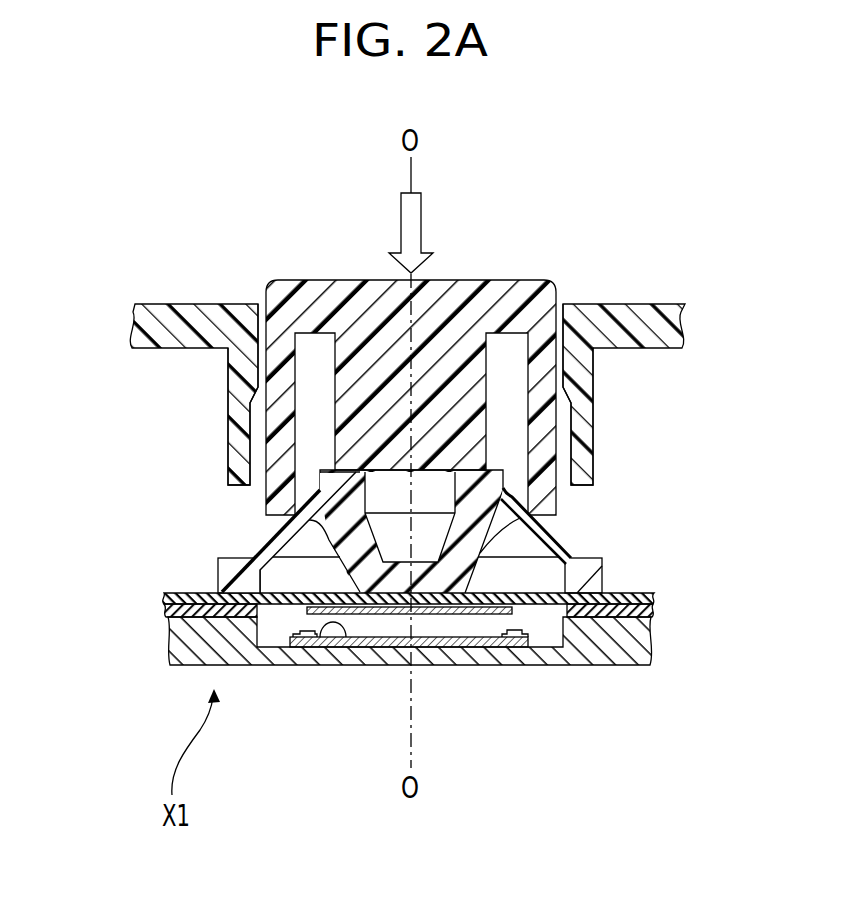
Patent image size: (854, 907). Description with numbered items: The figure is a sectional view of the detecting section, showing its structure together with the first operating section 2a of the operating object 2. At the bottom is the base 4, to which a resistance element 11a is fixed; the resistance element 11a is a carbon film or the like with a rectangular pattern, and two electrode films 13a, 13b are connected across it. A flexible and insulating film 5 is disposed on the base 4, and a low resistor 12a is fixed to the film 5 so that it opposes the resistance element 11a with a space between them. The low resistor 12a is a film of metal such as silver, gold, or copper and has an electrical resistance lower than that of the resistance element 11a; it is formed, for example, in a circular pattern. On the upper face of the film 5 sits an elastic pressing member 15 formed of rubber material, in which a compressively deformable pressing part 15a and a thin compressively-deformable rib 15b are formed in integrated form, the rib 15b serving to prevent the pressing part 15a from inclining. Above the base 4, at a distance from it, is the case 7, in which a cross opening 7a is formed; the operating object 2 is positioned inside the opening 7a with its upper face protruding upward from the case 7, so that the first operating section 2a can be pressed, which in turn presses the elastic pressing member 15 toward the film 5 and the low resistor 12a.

The operating object 2 is at (316, 276).
The first operating section 2a is at (493, 310).
The case 7 is at (638, 298).
The cross opening 7a is at (567, 298).
The elastic pressing member 15 is at (556, 527).
The pressing part 15a is at (557, 538).
The rib 15b is at (265, 542).
The film 5 is at (190, 594).
The base 4 is at (637, 637).
The resistance element 11a is at (327, 623).
The low resistor 12a is at (468, 614).
The electrode film 13a is at (277, 647).
The electrode film 13b is at (553, 647).